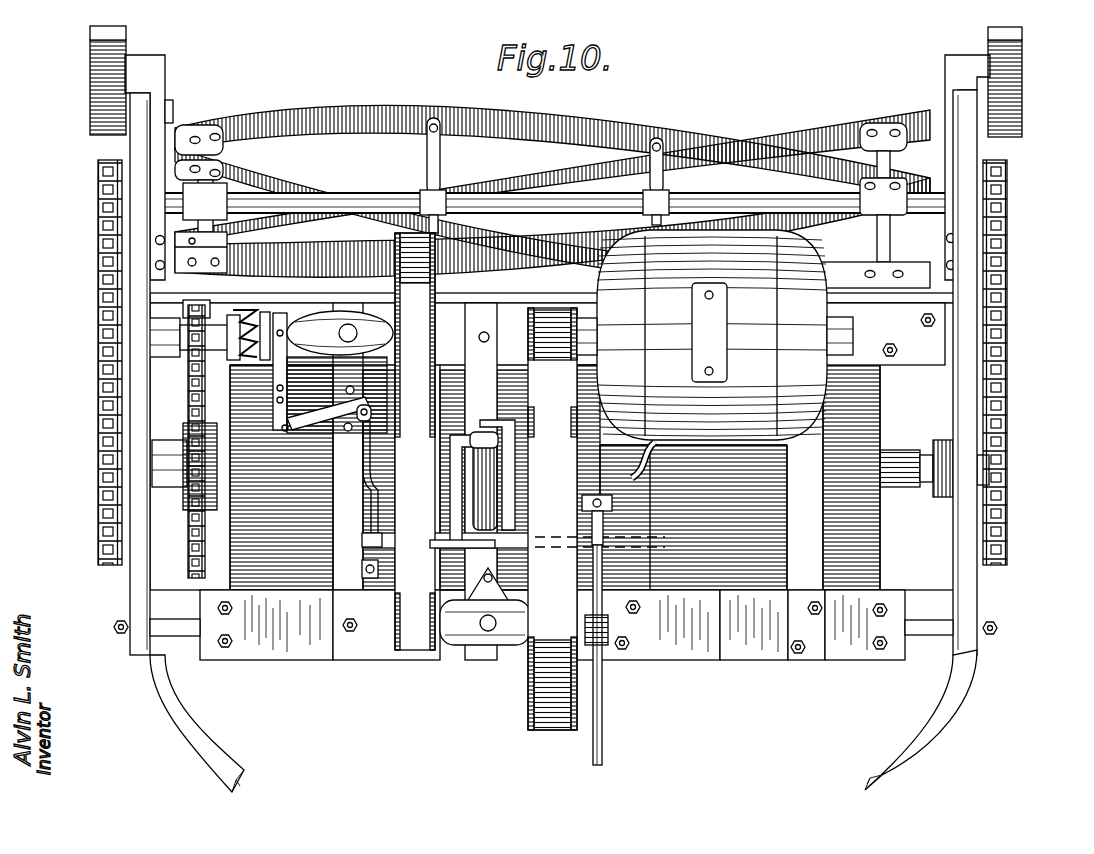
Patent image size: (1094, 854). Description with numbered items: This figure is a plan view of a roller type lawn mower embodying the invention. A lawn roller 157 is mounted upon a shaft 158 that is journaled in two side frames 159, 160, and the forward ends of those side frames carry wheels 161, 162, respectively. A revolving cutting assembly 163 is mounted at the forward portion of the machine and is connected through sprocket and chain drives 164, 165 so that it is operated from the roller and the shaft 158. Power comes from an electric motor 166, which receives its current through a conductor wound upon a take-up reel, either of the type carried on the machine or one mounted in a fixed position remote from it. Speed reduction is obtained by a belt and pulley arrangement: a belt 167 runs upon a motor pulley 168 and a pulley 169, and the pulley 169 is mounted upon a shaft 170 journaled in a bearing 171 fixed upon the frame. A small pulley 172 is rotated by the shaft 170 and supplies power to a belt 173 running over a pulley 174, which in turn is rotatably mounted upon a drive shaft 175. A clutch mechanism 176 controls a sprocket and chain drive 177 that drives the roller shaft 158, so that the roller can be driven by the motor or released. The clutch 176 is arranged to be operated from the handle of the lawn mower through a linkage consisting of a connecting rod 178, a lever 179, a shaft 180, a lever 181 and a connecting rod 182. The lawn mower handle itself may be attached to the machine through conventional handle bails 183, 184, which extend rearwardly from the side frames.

The lawn roller 157 is at (858, 440).
The shaft 158 is at (1000, 458).
The side frame 159 is at (968, 582).
The side frame 160 is at (138, 575).
The wheel 161 is at (1005, 105).
The wheel 162 is at (105, 78).
The revolving cutting assembly 163 is at (834, 111).
The sprocket and chain drive 164 is at (1008, 356).
The sprocket and chain drive 165 is at (100, 283).
The electric motor 166 is at (717, 420).
The belt 167 is at (552, 483).
The motor pulley 168 is at (537, 322).
The pulley 169 is at (528, 692).
The shaft 170 is at (608, 648).
The bearing 171 is at (465, 626).
The small pulley 172 is at (393, 633).
The belt 173 is at (403, 450).
The pulley 174 is at (393, 240).
The drive shaft 175 is at (250, 356).
The clutch mechanism 176 is at (285, 395).
The sprocket and chain drive 177 is at (191, 412).
The connecting rod 178 is at (598, 708).
The lever 179 is at (600, 495).
The shaft 180 is at (650, 540).
The lever 181 is at (372, 580).
The connecting rod 182 is at (370, 480).
The handle bail 183 is at (212, 752).
The handle bail 184 is at (906, 741).